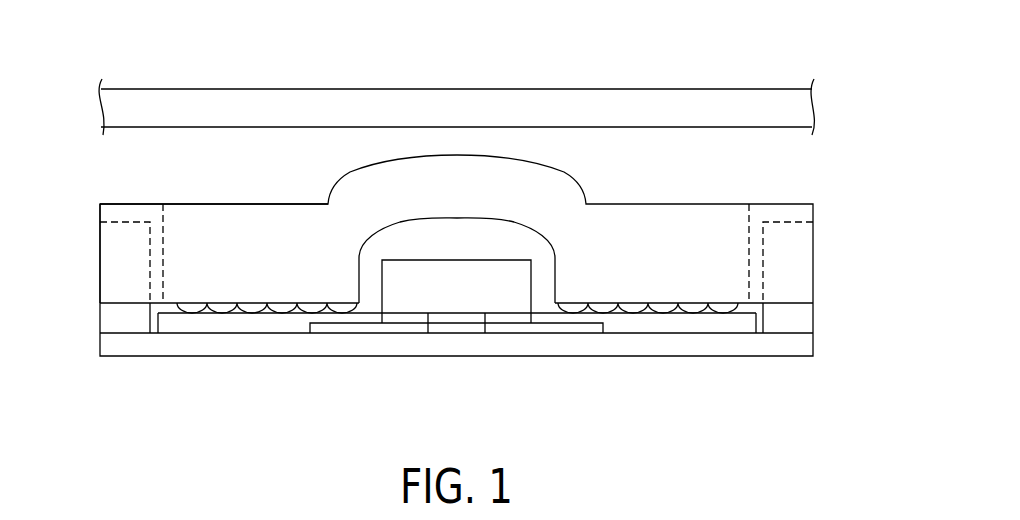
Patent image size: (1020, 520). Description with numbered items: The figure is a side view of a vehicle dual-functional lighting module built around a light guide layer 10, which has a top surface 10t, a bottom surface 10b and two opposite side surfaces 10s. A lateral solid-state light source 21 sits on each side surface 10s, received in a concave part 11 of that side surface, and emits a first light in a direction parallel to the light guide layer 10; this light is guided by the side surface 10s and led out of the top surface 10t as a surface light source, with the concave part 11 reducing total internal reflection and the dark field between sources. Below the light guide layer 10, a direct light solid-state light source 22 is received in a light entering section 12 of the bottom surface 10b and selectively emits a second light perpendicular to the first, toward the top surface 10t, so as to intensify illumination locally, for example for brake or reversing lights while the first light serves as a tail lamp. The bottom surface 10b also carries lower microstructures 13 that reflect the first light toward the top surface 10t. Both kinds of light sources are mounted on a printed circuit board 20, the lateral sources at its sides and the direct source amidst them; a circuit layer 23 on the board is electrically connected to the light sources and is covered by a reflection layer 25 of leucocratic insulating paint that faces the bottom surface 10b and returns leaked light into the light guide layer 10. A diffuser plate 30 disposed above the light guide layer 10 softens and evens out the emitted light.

The light guide layer 10 is at (767, 202).
The top surface 10t is at (186, 203).
The side surface 10s is at (100, 213).
The bottom surface 10b is at (262, 302).
The concave part 11 is at (165, 248).
The light entering section 12 is at (555, 285).
The lower microstructures 13 is at (663, 306).
The printed circuit board 20 is at (782, 357).
The lateral solid-state light source 21 is at (123, 263).
The direct light solid-state light source 22 is at (415, 295).
The circuit layer 23 is at (508, 323).
The reflection layer 25 is at (267, 316).
The diffuser plate 30 is at (767, 87).